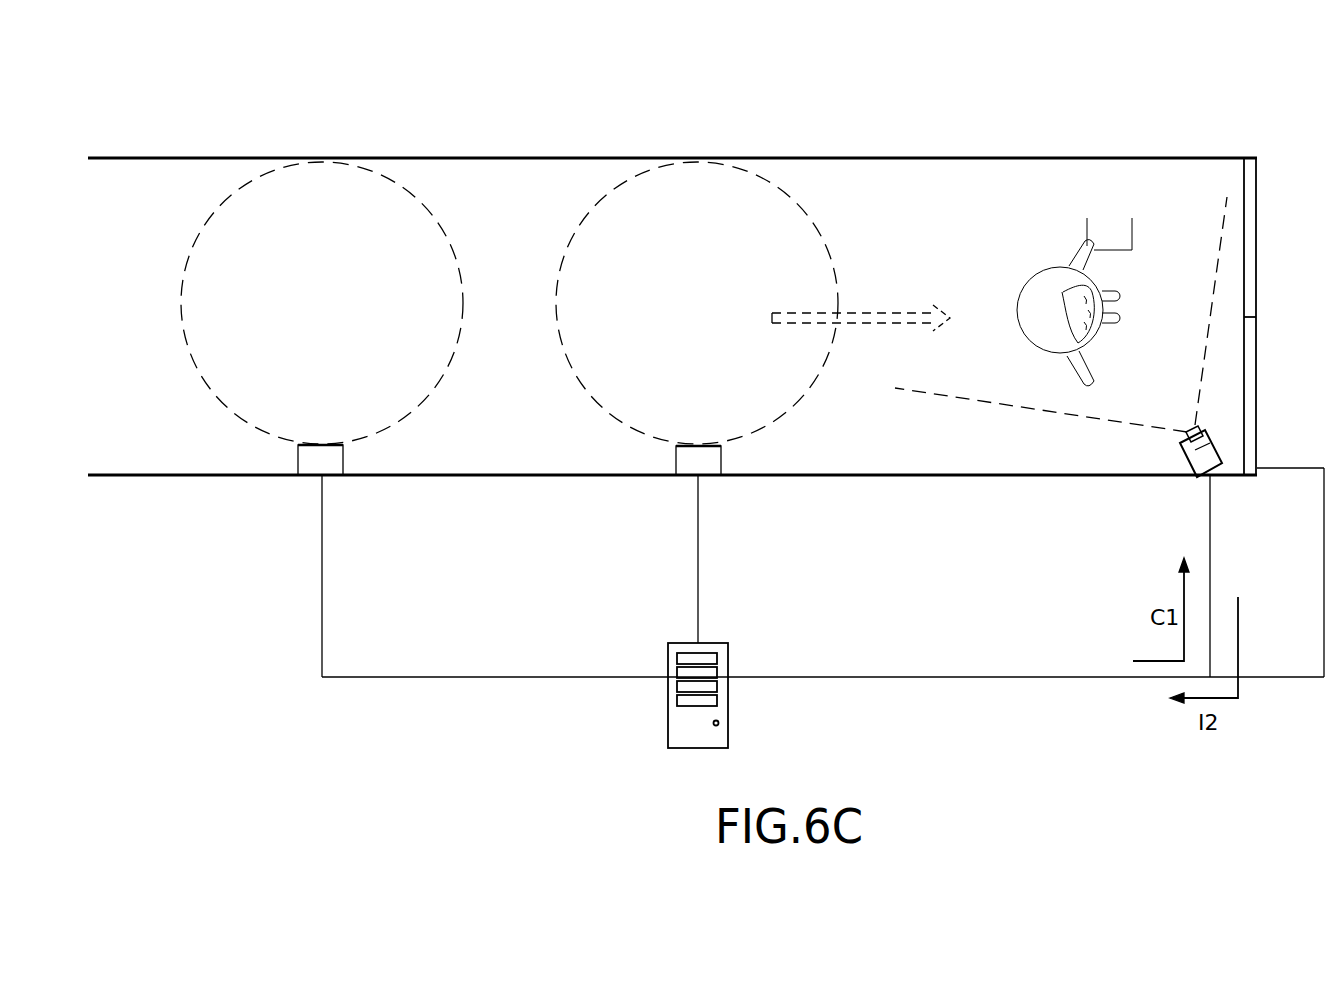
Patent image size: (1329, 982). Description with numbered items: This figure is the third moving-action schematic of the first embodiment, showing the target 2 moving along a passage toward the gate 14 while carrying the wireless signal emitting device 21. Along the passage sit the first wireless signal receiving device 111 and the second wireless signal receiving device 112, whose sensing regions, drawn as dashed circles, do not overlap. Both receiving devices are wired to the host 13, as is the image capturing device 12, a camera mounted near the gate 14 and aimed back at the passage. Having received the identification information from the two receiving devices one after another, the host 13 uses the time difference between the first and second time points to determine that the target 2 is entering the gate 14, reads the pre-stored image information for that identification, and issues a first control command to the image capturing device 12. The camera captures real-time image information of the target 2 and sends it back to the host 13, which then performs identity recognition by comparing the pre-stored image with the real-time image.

The target 2 is at (1042, 297).
The wireless signal emitting device 21 is at (1112, 227).
The image capturing device 12 is at (1197, 453).
The host 13 is at (722, 712).
The gate 14 is at (1252, 187).
The first wireless signal receiving device 111 is at (338, 460).
The second wireless signal receiving device 112 is at (712, 463).